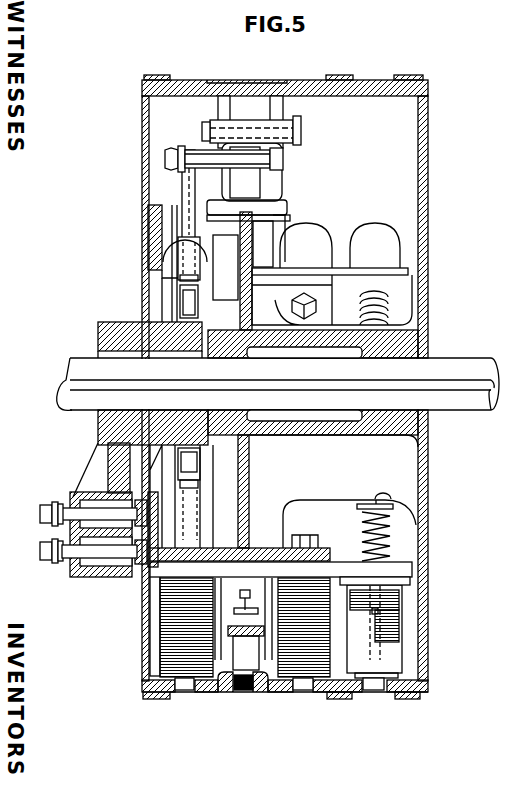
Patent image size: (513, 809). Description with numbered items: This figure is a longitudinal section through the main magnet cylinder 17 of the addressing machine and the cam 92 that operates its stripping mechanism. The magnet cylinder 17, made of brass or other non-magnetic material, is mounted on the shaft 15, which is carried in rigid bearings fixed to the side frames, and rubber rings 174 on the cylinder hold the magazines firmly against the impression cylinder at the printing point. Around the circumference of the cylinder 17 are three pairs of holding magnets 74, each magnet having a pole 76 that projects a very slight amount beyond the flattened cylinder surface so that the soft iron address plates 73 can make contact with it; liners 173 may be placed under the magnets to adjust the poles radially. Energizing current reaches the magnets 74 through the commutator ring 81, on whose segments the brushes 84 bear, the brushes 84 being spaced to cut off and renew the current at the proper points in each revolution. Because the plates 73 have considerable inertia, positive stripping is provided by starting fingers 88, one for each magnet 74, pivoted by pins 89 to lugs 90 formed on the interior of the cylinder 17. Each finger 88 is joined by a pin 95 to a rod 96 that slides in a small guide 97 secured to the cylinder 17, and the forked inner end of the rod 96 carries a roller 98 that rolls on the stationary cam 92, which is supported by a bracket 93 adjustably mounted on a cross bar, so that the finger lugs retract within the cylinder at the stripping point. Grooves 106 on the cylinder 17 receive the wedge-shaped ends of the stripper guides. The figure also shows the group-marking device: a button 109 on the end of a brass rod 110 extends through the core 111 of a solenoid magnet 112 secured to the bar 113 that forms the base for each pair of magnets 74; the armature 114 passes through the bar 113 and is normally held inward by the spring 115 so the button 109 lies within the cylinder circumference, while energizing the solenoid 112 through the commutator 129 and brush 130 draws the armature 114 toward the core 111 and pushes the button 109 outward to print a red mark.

The shaft 15 is at (457, 360).
The main magnet cylinder 17 is at (333, 459).
The address plate 73 is at (247, 692).
The holding magnet 74 is at (130, 652).
The pole 76 is at (185, 692).
The commutator ring 81 is at (146, 582).
The brush 84 is at (94, 560).
The starting finger 88 is at (272, 192).
The pin 89 is at (301, 134).
The lug 90 is at (207, 112).
The stationary cam 92 is at (112, 322).
The bracket 93 is at (93, 475).
The pin 95 is at (243, 170).
The rod 96 is at (182, 192).
The guide 97 is at (180, 252).
The roller 98 is at (180, 300).
The groove 106 is at (286, 80).
The button 109 is at (374, 695).
The brass rod 110 is at (402, 615).
The core 111 is at (378, 655).
The solenoid magnet 112 is at (438, 635).
The bar 113 is at (414, 566).
The armature 114 is at (402, 598).
The spring 115 is at (370, 304).
The commutator 129 is at (130, 490).
The brush 130 is at (60, 545).
The liner 173 is at (276, 545).
The rubber ring 174 is at (402, 75).